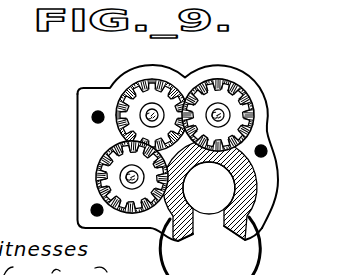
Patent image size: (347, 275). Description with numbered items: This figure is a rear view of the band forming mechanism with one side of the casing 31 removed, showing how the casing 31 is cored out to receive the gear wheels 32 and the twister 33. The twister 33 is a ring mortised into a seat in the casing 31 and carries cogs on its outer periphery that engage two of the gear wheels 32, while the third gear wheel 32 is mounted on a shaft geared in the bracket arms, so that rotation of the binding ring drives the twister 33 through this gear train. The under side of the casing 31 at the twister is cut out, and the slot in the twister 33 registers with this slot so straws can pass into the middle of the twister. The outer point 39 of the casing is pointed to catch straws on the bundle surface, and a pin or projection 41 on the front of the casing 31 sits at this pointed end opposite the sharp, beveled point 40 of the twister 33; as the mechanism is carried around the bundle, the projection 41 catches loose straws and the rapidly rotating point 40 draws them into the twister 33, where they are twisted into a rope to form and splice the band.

The casing 31 is at (183, 76).
The gear wheels 32 is at (142, 97).
The twister 33 is at (253, 190).
The outer point of the casing 39 is at (222, 242).
The point of the twister 40 is at (182, 235).
The pin or projection 41 is at (230, 208).